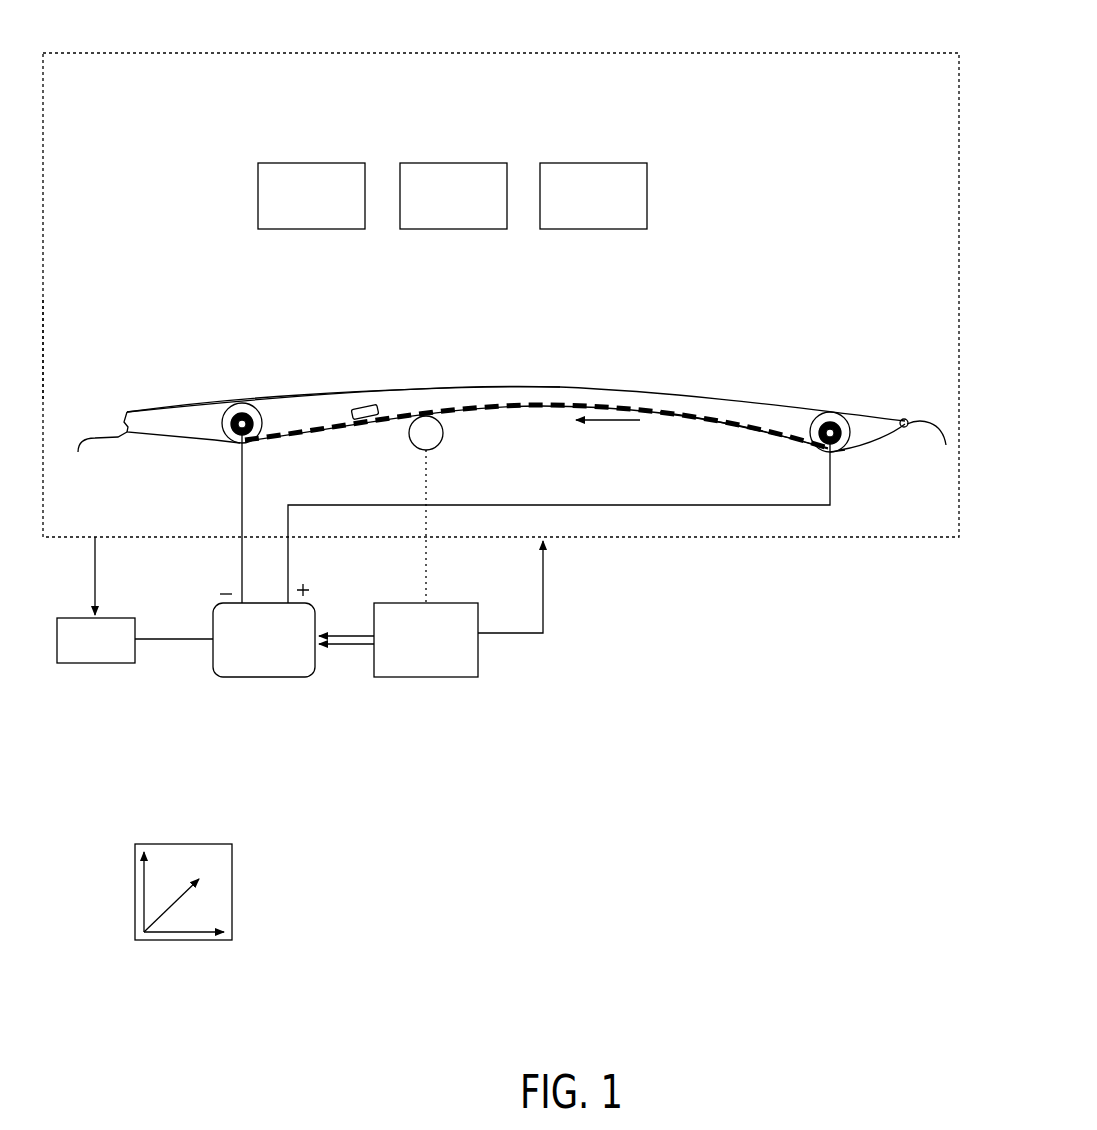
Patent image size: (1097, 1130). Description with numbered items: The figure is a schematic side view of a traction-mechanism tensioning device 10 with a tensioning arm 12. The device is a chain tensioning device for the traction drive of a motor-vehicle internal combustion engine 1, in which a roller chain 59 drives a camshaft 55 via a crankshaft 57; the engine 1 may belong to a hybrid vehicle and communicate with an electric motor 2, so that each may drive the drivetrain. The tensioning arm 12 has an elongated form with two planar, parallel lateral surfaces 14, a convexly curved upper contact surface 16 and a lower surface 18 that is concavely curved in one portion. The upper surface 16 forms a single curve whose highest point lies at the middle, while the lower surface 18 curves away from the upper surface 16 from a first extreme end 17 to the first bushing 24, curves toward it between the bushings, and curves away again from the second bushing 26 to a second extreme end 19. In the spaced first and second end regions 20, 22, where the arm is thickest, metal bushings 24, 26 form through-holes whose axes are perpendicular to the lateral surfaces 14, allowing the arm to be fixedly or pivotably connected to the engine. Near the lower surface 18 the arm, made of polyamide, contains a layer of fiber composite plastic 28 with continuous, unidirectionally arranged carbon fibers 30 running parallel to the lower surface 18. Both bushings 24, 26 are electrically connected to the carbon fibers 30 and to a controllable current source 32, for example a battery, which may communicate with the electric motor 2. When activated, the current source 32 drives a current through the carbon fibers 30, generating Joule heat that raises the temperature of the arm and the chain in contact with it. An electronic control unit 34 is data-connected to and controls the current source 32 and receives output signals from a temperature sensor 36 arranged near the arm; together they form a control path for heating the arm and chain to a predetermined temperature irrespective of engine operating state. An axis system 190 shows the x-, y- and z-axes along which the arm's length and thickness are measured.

The internal combustion engine 1 is at (113, 55).
The electric motor 2 is at (105, 654).
The traction-mechanism tensioning device 10 is at (168, 121).
The tensioning arm 12 is at (713, 250).
The lateral surfaces 14 is at (188, 416).
The upper contact surface 16 is at (340, 392).
The first extreme end 17 is at (96, 459).
The lower surface 18 is at (748, 430).
The second extreme end 19 is at (937, 446).
The first end region 20 is at (218, 328).
The second end region 22 is at (833, 362).
The first bushing 24 is at (232, 440).
The second bushing 26 is at (850, 438).
The fiber composite plastic 28 is at (572, 405).
The carbon fibers 30 is at (536, 380).
The controllable current source 32 is at (280, 654).
The electronic control unit 34 is at (443, 654).
The temperature sensor 36 is at (442, 436).
The camshaft 55 is at (328, 207).
The crankshaft 57 is at (470, 207).
The roller chain 59 is at (610, 207).
The axis system 190 is at (232, 862).